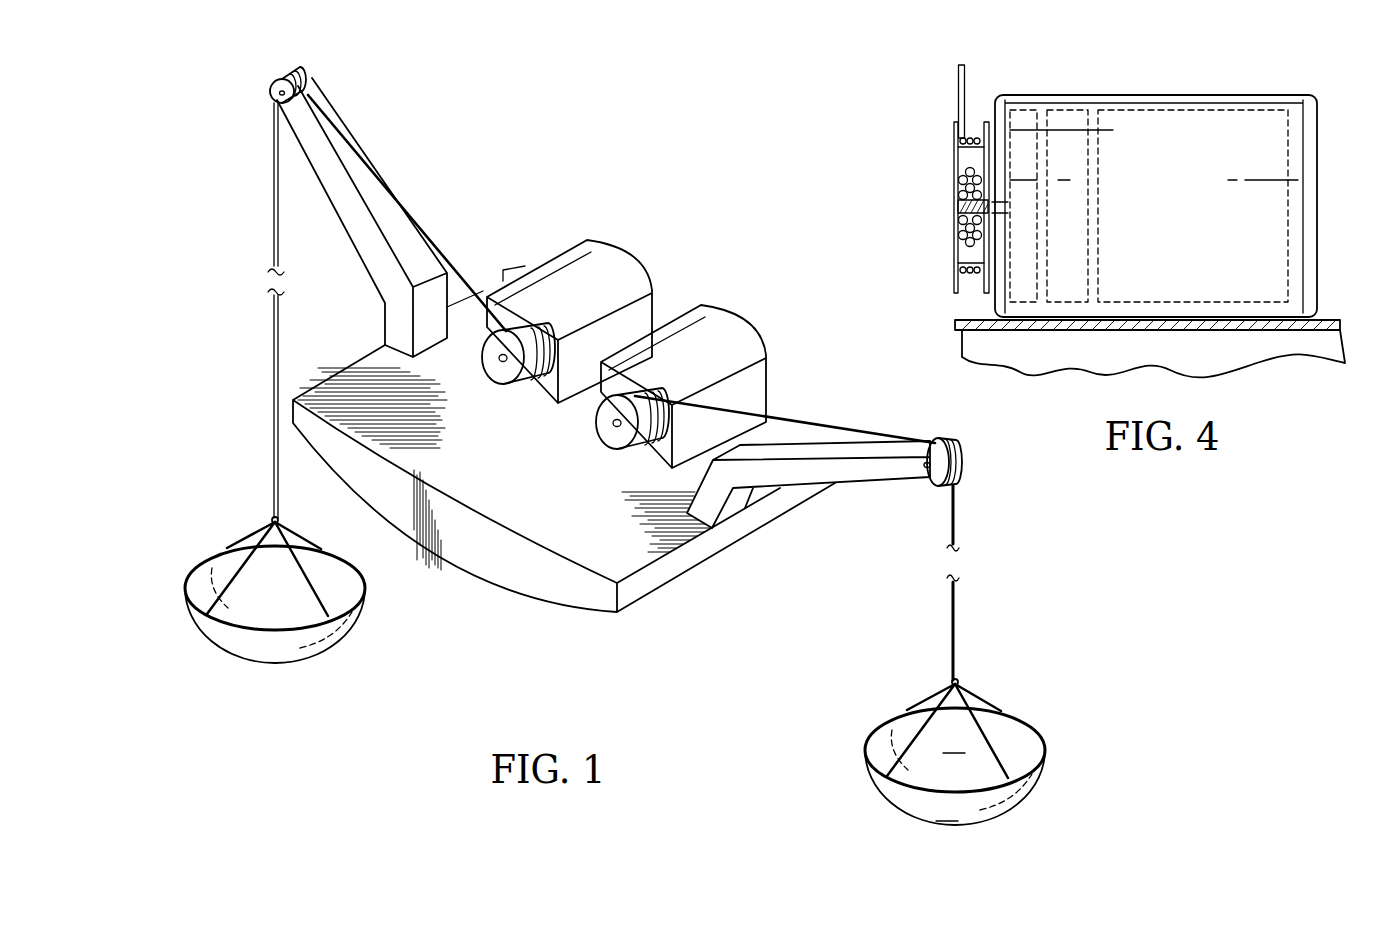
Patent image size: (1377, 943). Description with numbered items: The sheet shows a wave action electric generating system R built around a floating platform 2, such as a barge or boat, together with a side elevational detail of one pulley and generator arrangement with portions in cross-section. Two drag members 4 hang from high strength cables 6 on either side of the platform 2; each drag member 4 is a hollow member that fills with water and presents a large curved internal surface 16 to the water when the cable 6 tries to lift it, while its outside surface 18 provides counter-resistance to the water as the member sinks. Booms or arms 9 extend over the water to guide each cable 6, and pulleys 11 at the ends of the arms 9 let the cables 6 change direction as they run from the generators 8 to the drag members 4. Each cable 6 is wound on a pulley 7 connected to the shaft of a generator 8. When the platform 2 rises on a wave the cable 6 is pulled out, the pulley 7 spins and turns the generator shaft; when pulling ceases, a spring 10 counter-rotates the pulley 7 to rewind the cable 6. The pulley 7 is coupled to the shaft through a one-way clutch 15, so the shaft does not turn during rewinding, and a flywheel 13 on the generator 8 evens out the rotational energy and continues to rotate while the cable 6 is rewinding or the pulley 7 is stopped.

In FIG. 1, the floating platform 2 is at (680, 578).
In FIG. 4, the floating platform 2 is at (1283, 370).
In FIG. 1, the drag member 4 is at (653, 671).
In FIG. 1, the cable 6 is at (275, 188).
In FIG. 4, the cable 6 is at (966, 76).
In FIG. 1, the pulley 7 is at (500, 383).
In FIG. 4, the pulley 7 is at (952, 226).
In FIG. 1, the generator 8 is at (617, 245).
In FIG. 4, the generator 8 is at (1242, 93).
In FIG. 1, the boom or arm 9 is at (385, 212).
In FIG. 4, the spring 10 is at (955, 183).
In FIG. 1, the pulley 11 is at (311, 82).
In FIG. 4, the flywheel 13 is at (1067, 303).
In FIG. 4, the one-way clutch 15 is at (1027, 110).
In FIG. 1, the internal surface 16 is at (263, 591).
In FIG. 1, the outside surface 18 is at (256, 659).
In FIG. 1, the wave action electric generating system R is at (546, 189).